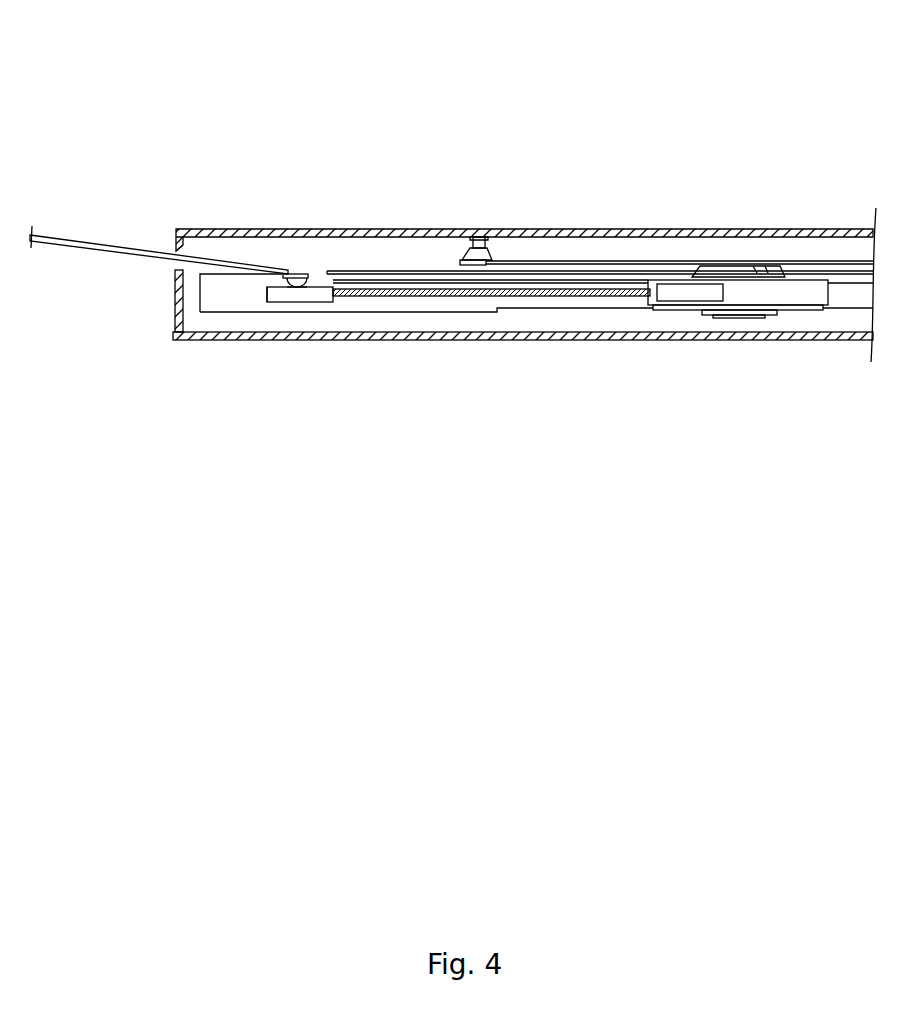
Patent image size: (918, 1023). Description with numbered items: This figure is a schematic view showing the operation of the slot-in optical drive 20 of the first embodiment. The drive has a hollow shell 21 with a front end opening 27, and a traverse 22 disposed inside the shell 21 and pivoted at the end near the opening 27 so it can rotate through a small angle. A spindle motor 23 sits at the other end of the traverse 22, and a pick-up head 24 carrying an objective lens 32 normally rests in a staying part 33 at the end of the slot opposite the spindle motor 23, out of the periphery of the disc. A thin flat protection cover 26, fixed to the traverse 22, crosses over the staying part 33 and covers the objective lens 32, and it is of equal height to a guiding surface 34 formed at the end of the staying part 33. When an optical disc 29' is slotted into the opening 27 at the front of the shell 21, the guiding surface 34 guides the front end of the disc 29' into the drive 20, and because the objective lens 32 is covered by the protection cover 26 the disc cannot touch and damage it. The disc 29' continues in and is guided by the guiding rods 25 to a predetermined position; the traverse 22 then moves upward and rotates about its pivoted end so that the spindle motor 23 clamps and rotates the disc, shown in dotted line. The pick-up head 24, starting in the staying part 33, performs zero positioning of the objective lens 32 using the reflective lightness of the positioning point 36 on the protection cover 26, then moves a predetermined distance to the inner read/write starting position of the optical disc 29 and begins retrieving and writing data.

The optical drive 20 is at (855, 40).
The shell 21 is at (634, 228).
The traverse 22 is at (382, 312).
The spindle motor 23 is at (745, 302).
The pick-up head 24 is at (300, 301).
The guiding rods 25 is at (508, 258).
The protection cover 26 is at (292, 274).
The front end opening 27 is at (178, 261).
The optical disc 29 is at (600, 222).
The optical disc 29' is at (159, 208).
The objective lens 32 is at (308, 276).
The staying part 33 is at (266, 285).
The guiding surface 34 is at (218, 277).
The positioning point 36 is at (290, 286).